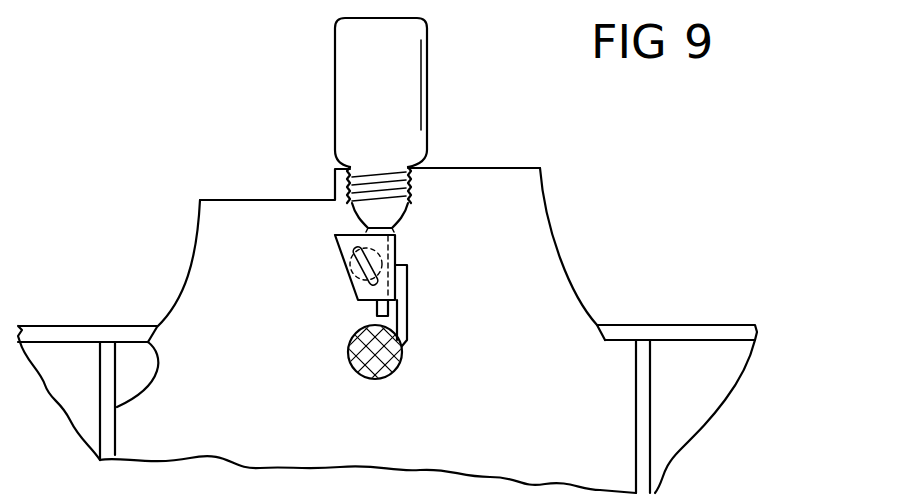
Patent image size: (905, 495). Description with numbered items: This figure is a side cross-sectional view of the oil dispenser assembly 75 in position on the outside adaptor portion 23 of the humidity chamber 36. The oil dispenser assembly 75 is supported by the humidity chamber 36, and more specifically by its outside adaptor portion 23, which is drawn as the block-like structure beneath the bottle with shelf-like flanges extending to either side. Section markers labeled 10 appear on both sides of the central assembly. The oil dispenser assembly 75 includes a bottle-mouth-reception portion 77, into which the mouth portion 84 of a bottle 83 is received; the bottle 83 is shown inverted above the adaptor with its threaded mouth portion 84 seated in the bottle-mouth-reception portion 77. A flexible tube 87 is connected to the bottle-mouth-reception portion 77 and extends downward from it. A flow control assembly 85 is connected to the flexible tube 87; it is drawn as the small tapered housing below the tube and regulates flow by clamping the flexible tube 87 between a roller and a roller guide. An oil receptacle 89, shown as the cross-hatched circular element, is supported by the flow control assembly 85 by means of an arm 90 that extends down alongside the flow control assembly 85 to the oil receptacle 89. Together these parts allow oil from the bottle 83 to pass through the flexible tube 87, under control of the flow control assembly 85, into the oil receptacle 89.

The bottle 83 is at (405, 75).
The mouth portion 84 is at (350, 170).
The flexible tube 87 is at (374, 229).
The outside adaptor portion 23 is at (450, 166).
The bottle-mouth-reception portion 77 is at (410, 202).
The oil dispenser assembly 75 is at (505, 209).
The humidity chamber 36 is at (148, 342).
The section line 10 is at (277, 302).
The flow control assembly 85 is at (343, 283).
The oil receptacle 89 is at (364, 368).
The arm 90 is at (408, 318).